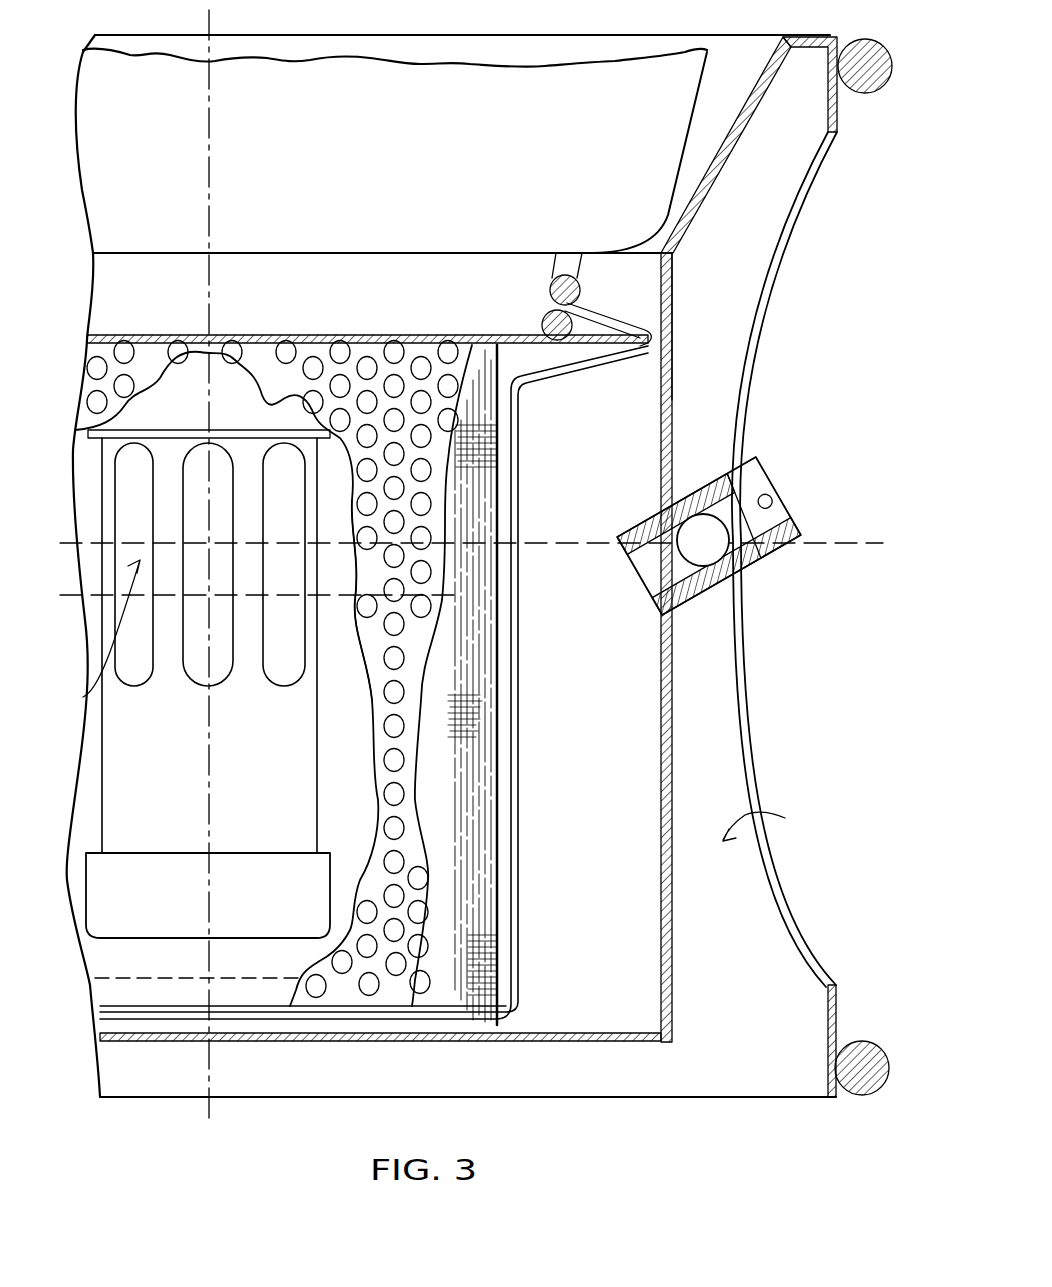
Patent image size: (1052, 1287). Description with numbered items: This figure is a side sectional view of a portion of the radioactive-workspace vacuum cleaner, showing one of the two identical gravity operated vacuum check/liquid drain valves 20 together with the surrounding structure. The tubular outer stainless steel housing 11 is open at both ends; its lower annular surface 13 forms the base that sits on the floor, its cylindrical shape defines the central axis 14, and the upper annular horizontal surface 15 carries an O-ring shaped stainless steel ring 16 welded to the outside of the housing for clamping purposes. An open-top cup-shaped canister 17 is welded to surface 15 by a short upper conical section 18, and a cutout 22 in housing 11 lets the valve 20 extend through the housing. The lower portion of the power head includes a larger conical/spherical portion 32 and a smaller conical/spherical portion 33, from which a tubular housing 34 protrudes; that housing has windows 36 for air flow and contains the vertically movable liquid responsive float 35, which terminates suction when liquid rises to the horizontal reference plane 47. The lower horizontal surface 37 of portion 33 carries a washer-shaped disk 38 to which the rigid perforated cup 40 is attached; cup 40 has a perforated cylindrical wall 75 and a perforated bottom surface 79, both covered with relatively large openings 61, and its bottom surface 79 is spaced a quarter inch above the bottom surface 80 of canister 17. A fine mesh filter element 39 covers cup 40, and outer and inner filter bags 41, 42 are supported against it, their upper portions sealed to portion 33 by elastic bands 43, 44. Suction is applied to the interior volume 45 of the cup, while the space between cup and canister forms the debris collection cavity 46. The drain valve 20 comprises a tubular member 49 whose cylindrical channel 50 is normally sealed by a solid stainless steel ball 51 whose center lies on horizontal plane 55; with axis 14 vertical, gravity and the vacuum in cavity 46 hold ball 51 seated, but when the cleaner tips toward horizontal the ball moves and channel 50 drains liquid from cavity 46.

The outer stainless steel housing 11 is at (776, 833).
The annular surface 13 is at (707, 1097).
The central axis 14 is at (214, 218).
The upper annular horizontal surface 15 is at (827, 67).
The O-ring shaped stainless steel ring 16 is at (876, 90).
The canister 17 is at (672, 927).
The upper conical section 18 is at (718, 182).
The gravity operated vacuum check/liquid drain valve 20 is at (717, 482).
The cutout 22 is at (760, 327).
The larger diameter conical/spherical portion 32 is at (643, 225).
The smaller diameter conical/spherical portion 33 is at (552, 300).
The tubular housing 34 is at (310, 705).
The liquid responsive float 35 is at (95, 641).
The windows 36 is at (130, 678).
The lower horizontal surface 37 is at (330, 335).
The washer-shaped disk 38 is at (575, 352).
The filter element 39 is at (465, 662).
The cup 40 is at (300, 413).
The outer filter bag 41 is at (667, 313).
The inner filter bag 42 is at (593, 337).
The elastic band 43 is at (582, 253).
The elastic band 44 is at (543, 320).
The interior volume 45 is at (360, 802).
The cavity 46 is at (598, 708).
The horizontal reference plane 47 is at (435, 598).
The tubular member 49 is at (705, 588).
The cylindrical channel 50 is at (652, 558).
The solid stainless steel ball 51 is at (770, 477).
The horizontal plane 55 is at (440, 545).
The openings 61 is at (292, 340).
The cylindrical wall 75 is at (407, 830).
The bottom surface 79 is at (237, 1006).
The bottom surface 80 is at (557, 1033).